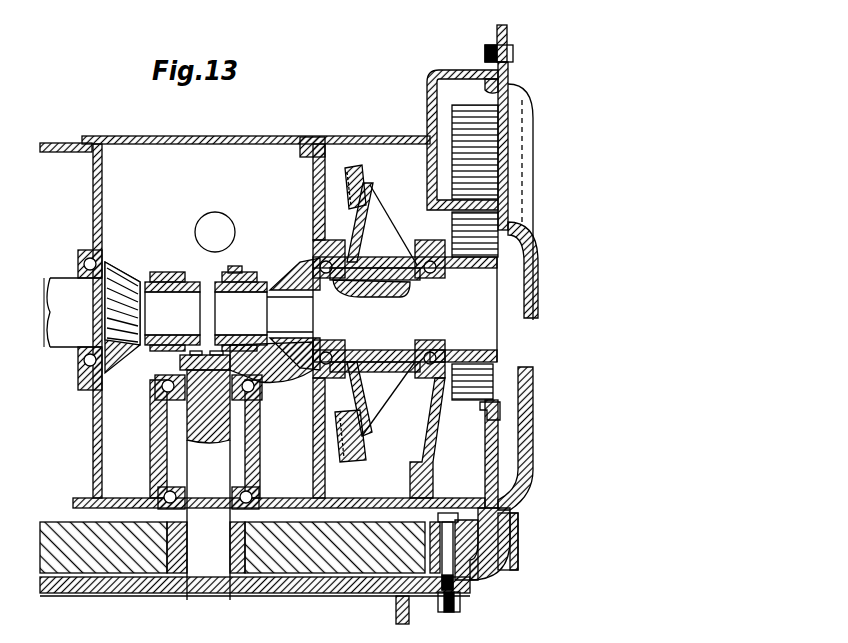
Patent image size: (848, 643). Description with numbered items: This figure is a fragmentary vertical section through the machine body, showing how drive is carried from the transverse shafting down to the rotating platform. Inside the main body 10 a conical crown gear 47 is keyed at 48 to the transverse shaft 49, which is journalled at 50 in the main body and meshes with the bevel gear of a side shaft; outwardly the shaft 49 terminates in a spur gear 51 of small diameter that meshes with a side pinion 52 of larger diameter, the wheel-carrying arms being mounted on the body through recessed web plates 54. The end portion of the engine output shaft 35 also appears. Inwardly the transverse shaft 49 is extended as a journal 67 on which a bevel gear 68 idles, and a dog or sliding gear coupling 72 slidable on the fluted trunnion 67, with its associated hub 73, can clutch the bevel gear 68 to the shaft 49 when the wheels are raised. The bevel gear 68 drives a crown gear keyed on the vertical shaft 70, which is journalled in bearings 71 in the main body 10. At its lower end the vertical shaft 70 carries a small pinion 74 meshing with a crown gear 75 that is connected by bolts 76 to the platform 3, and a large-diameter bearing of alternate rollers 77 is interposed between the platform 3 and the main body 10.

The platform 3 is at (158, 585).
The main body 10 is at (277, 213).
The output shaft of the engine 35 is at (215, 222).
The conical crown gear 47 is at (366, 178).
The key 48 is at (383, 282).
The transverse shaft 49 is at (396, 325).
The journal 50 is at (437, 352).
The spur gear 51 is at (498, 267).
The side pinion 52 is at (485, 165).
The web plate 54 is at (507, 93).
The journal 67 is at (262, 325).
The bevel gear 68 is at (287, 268).
The vertical shaft 70 is at (222, 442).
The bearing 71 is at (263, 392).
The dog or sliding gear coupling 72 is at (240, 273).
The coupling hub 73 is at (224, 298).
The small pinion 74 is at (240, 565).
The crown gear 75 is at (385, 560).
The bolt 76 is at (473, 580).
The roller 77 is at (505, 541).